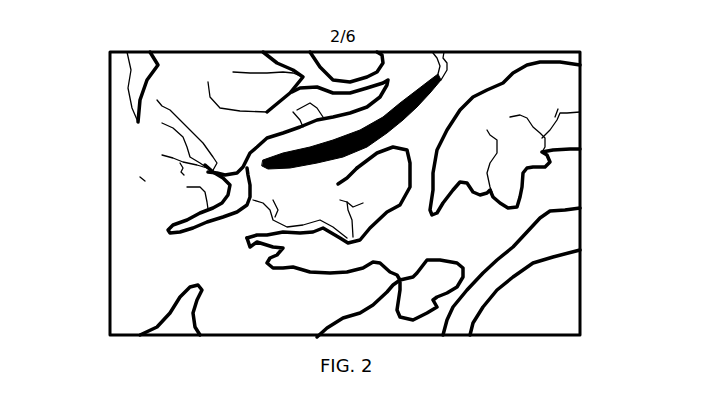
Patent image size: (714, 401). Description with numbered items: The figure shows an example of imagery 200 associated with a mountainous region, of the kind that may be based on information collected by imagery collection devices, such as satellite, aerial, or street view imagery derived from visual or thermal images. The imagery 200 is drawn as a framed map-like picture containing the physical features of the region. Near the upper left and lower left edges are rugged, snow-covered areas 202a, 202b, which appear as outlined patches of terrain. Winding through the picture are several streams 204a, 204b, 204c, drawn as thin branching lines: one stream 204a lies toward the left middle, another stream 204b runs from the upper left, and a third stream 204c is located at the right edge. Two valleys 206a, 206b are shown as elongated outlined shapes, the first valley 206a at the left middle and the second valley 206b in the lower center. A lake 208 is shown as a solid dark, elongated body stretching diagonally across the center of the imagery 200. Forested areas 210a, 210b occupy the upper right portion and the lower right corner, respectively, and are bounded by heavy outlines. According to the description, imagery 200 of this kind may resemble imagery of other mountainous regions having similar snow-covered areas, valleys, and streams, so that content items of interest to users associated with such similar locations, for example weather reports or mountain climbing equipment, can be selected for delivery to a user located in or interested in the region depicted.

The imagery 200 is at (92, 64).
The rugged, snow-covered area 202a is at (143, 180).
The rugged, snow-covered area 202b is at (235, 313).
The stream 204a is at (160, 226).
The stream 204b is at (167, 107).
The stream 204c is at (580, 112).
The valley 206a is at (168, 230).
The valley 206b is at (312, 253).
The lake 208 is at (433, 53).
The forested area 210a is at (478, 77).
The forested area 210b is at (565, 194).